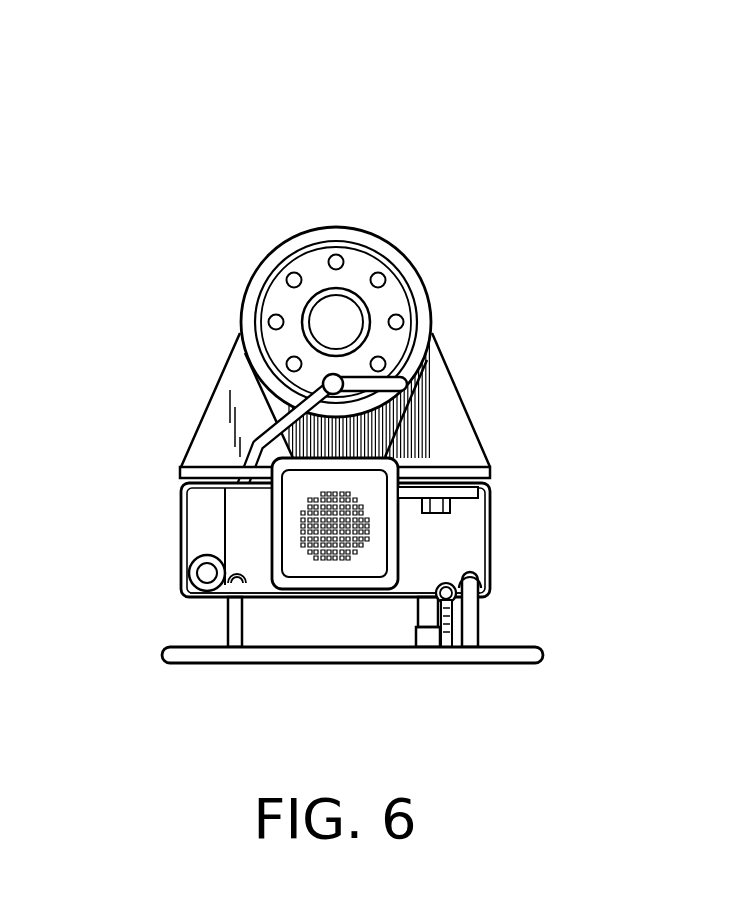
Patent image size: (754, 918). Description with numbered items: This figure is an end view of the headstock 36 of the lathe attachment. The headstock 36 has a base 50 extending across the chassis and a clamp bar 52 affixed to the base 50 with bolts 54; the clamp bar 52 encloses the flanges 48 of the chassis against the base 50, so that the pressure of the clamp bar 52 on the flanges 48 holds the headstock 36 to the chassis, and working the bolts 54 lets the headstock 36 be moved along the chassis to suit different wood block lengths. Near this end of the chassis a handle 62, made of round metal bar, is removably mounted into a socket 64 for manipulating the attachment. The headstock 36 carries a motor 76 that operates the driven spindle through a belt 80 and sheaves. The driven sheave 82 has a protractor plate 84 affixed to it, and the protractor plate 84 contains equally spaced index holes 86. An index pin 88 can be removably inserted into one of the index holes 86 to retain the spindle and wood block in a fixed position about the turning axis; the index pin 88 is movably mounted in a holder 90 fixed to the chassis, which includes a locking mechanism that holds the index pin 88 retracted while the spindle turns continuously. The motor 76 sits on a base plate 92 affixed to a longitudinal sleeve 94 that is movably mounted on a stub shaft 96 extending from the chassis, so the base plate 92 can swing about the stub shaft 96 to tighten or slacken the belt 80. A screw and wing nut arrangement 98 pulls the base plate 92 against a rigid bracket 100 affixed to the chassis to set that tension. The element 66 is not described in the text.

The headstock 36 is at (602, 124).
The flanges 48 is at (195, 467).
The base 50 is at (458, 470).
The clamp bar 52 is at (478, 513).
The bolts 54 is at (487, 523).
The handle 62 is at (543, 658).
The sockets 64 is at (476, 568).
The housing 66 is at (460, 536).
The motor 76 is at (272, 532).
The belt 80 is at (247, 403).
The driven sheave 82 is at (412, 257).
The protractor plate 84 is at (367, 250).
The index holes 86 is at (295, 275).
The index pin 88 is at (372, 375).
The holder 90 is at (258, 438).
The base plate 92 is at (337, 598).
The longitudinal sleeve 94 is at (183, 550).
The stub shaft 96 is at (205, 575).
The screw and wing nut arrangement 98 is at (480, 612).
The rigid bracket 100 is at (420, 616).